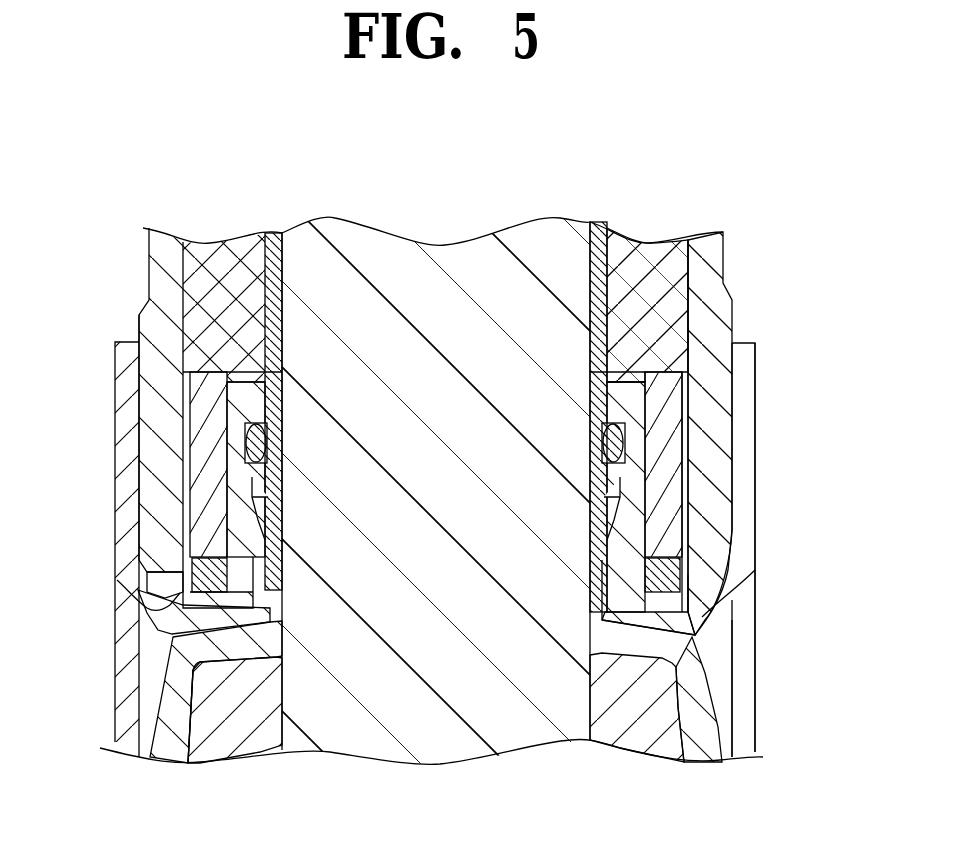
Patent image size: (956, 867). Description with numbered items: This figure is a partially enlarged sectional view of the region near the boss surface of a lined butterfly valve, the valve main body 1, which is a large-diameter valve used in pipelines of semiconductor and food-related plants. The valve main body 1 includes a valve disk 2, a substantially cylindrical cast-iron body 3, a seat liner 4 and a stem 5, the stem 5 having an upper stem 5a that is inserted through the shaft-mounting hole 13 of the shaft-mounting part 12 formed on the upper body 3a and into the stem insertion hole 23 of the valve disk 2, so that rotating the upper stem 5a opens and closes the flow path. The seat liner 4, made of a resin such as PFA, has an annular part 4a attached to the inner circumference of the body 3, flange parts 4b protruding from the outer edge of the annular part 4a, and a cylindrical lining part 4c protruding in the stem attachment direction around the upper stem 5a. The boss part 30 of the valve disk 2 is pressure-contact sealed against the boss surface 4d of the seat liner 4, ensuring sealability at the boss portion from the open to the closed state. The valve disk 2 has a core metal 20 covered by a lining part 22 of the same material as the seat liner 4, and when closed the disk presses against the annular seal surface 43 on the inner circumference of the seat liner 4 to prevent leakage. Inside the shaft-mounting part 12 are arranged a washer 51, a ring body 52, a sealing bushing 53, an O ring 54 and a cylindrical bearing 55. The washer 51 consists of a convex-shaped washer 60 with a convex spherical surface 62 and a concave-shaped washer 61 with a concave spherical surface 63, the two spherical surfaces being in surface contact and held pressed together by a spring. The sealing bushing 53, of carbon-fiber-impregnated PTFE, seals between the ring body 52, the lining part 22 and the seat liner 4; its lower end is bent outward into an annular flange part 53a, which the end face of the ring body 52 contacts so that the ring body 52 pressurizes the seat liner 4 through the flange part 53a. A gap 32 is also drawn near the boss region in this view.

The valve main body 1 is at (773, 286).
The valve disk 2 is at (148, 746).
The body 3 is at (150, 331).
The upper body 3a is at (714, 400).
The seat liner 4 is at (125, 440).
The annular part 4a is at (745, 683).
The flange part 4b is at (758, 455).
The cylindrical lining part 4c is at (192, 520).
The boss surface 4d is at (172, 652).
The stem 5 is at (493, 737).
The upper stem 5a is at (408, 282).
The shaft-mounting part 12 is at (703, 333).
The shaft-mounting hole 13 is at (676, 277).
The core metal 20 is at (622, 740).
The lining part 22 is at (702, 745).
The stem insertion hole 23 is at (310, 690).
The boss part 30 is at (693, 630).
The gap 32 is at (150, 690).
The annular seal surface 43 is at (663, 625).
The washer 51 is at (51, 578).
The ring body 52 is at (195, 388).
The sealing bushing 53 is at (245, 393).
The annular flange part 53a is at (700, 620).
The O ring 54 is at (250, 435).
The cylindrical bearing 55 is at (642, 262).
The convex-shaped washer 60 is at (170, 583).
The concave-shaped washer 61 is at (165, 608).
The convex spherical surface 62 is at (725, 605).
The concave spherical surface 63 is at (200, 566).